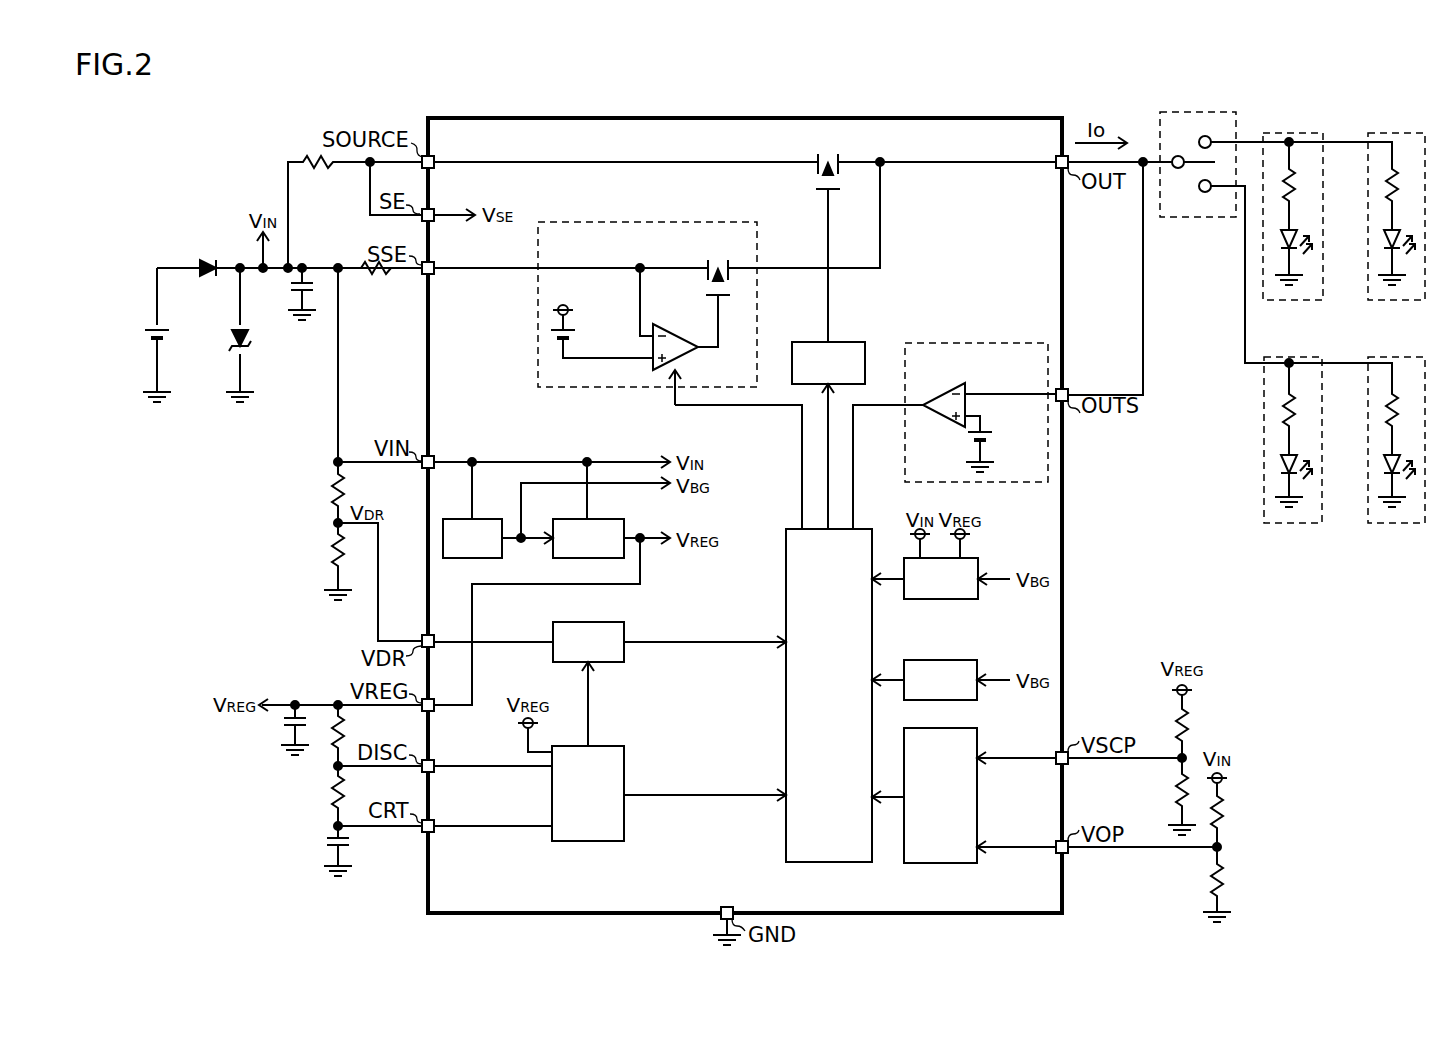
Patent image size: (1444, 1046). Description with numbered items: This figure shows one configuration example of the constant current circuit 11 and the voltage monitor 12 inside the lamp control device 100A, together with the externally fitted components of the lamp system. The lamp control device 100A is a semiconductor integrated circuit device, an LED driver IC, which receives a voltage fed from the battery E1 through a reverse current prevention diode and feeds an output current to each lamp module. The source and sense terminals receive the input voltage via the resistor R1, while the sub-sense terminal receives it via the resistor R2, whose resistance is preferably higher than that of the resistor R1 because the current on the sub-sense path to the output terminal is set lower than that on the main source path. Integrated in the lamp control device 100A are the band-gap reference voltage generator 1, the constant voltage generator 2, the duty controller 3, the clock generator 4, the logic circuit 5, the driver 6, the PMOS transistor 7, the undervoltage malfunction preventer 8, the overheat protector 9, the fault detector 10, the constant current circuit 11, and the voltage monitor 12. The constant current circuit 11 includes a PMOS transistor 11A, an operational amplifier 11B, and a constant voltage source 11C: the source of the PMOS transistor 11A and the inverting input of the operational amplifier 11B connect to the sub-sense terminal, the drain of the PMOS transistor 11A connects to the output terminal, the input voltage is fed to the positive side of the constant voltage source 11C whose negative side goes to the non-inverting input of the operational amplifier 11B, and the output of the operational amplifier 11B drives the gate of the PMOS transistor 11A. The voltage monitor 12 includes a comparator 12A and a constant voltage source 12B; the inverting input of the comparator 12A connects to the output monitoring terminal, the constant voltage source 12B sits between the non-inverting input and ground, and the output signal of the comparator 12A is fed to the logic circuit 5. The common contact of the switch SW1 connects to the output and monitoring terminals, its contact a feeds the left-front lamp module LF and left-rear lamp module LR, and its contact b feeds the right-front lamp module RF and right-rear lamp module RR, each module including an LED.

The lamp control device 100A is at (870, 118).
The band-gap reference voltage generator 1 is at (490, 519).
The constant voltage generator 2 is at (610, 519).
The duty controller 3 is at (589, 622).
The clock generator 4 is at (609, 744).
The logic circuit 5 is at (873, 532).
The driver 6 is at (857, 342).
The PMOS transistor 7 is at (828, 154).
The undervoltage malfunction preventer 8 is at (980, 565).
The overheat protector 9 is at (979, 677).
The fault detector 10 is at (977, 748).
The constant current circuit 11 is at (644, 222).
The PMOS transistor 11A is at (719, 259).
The operational amplifier 11B is at (664, 332).
The constant voltage source 11C is at (578, 342).
The voltage monitor 12 is at (976, 342).
The comparator 12A is at (948, 387).
The constant voltage source 12B is at (993, 441).
The battery E1 is at (168, 337).
The resistor R1 is at (318, 172).
The resistor R2 is at (373, 278).
The switch SW1 is at (1197, 112).
The left-front lamp module LF is at (1289, 302).
The left-rear lamp module LR is at (1392, 302).
The right-front lamp module RF is at (1289, 525).
The right-rear lamp module RR is at (1392, 525).